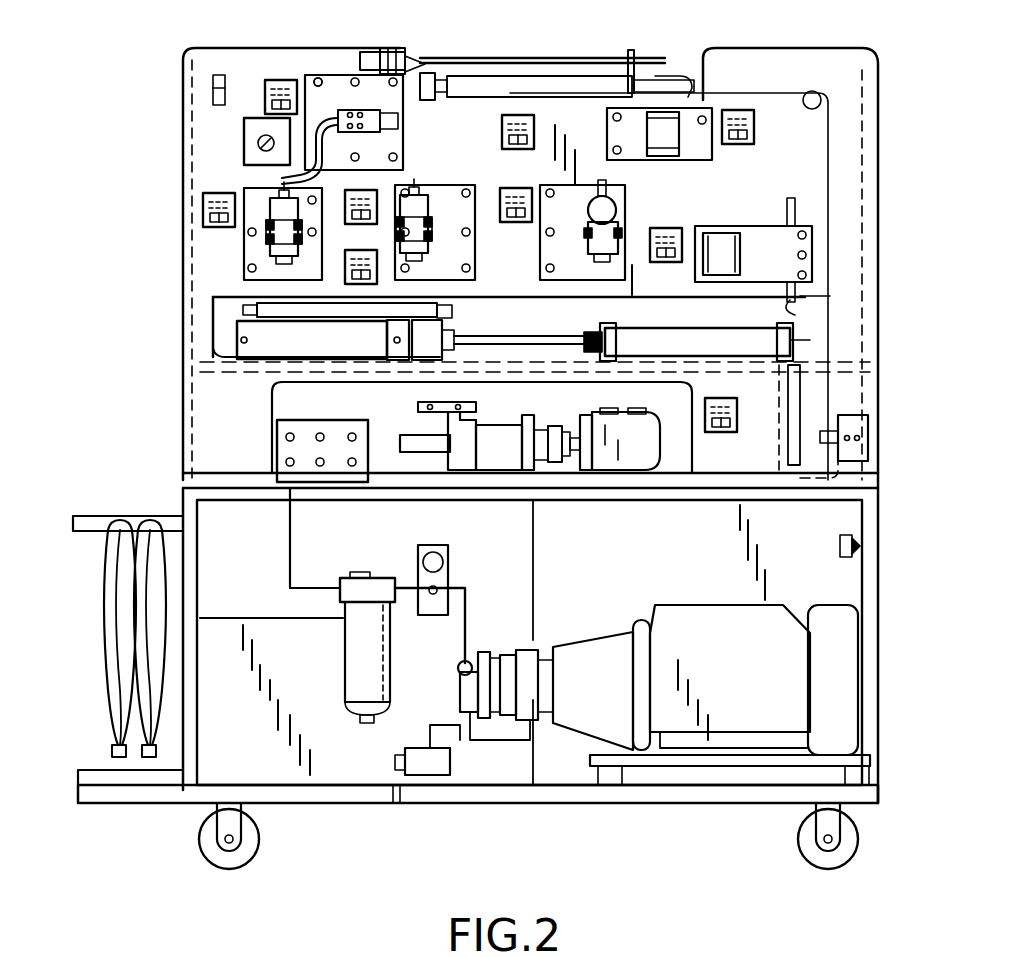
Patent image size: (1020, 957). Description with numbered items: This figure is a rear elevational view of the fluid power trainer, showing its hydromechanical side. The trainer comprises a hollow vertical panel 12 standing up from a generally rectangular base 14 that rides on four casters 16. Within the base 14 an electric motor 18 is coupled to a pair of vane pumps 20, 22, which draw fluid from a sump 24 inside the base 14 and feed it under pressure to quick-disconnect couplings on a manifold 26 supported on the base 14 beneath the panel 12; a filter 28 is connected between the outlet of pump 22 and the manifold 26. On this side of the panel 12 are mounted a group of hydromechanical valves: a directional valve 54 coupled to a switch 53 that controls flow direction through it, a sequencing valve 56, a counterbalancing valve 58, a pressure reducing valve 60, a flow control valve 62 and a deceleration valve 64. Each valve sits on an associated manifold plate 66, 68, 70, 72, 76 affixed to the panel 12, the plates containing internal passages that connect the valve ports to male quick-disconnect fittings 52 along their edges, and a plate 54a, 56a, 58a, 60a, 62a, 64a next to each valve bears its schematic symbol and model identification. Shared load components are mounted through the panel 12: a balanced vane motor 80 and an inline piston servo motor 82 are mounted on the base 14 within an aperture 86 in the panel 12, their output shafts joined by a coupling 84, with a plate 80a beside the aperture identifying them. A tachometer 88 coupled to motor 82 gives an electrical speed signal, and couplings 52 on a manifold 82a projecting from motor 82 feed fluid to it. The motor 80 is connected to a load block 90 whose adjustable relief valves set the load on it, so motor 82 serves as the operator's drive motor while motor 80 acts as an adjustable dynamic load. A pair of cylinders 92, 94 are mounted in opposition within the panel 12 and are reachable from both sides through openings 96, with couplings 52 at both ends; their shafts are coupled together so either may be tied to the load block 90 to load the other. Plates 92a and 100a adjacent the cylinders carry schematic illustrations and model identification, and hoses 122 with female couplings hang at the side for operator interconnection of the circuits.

The hollow vertical panel 12 is at (815, 62).
The base 14 is at (885, 560).
The casters 16 is at (250, 852).
The electric motor 18 is at (706, 616).
The vane pump 20 is at (524, 660).
The vane pump 22 is at (460, 694).
The sump 24 is at (258, 735).
The manifold 26 is at (275, 451).
The filter 28 is at (347, 649).
The male quick-disconnect fittings 52 is at (319, 78).
The switch 53 is at (240, 131).
The directional valve 54 is at (400, 120).
The plate 54a is at (268, 90).
The sequencing valve 56 is at (280, 252).
The plate 56a is at (212, 202).
The counterbalancing valve 58 is at (422, 206).
The plate 58a is at (376, 186).
The pressure reducing valve 60 is at (608, 210).
The plate 60a is at (532, 192).
The flow control valve 62 is at (742, 252).
The plate 62a is at (688, 216).
The deceleration valve 64 is at (688, 150).
The plate 64a is at (756, 129).
The manifold plate 66 is at (358, 80).
The manifold plate 68 is at (242, 278).
The manifold plate 70 is at (475, 245).
The manifold plate 72 is at (578, 192).
The manifold plate 76 is at (700, 114).
The balanced vane motor 80 is at (644, 432).
The plate 80a is at (740, 430).
The inline piston servo motor 82 is at (501, 430).
The manifold 82a is at (461, 500).
The coupling 84 is at (552, 430).
The aperture 86 is at (706, 387).
The tachometer 88 is at (411, 434).
The load block 90 is at (850, 422).
The cylinder 92 is at (281, 349).
The plate 92a is at (534, 282).
The cylinder 94 is at (786, 347).
The openings 96 is at (243, 312).
The plate 100a is at (525, 116).
The hoses 122 is at (90, 590).